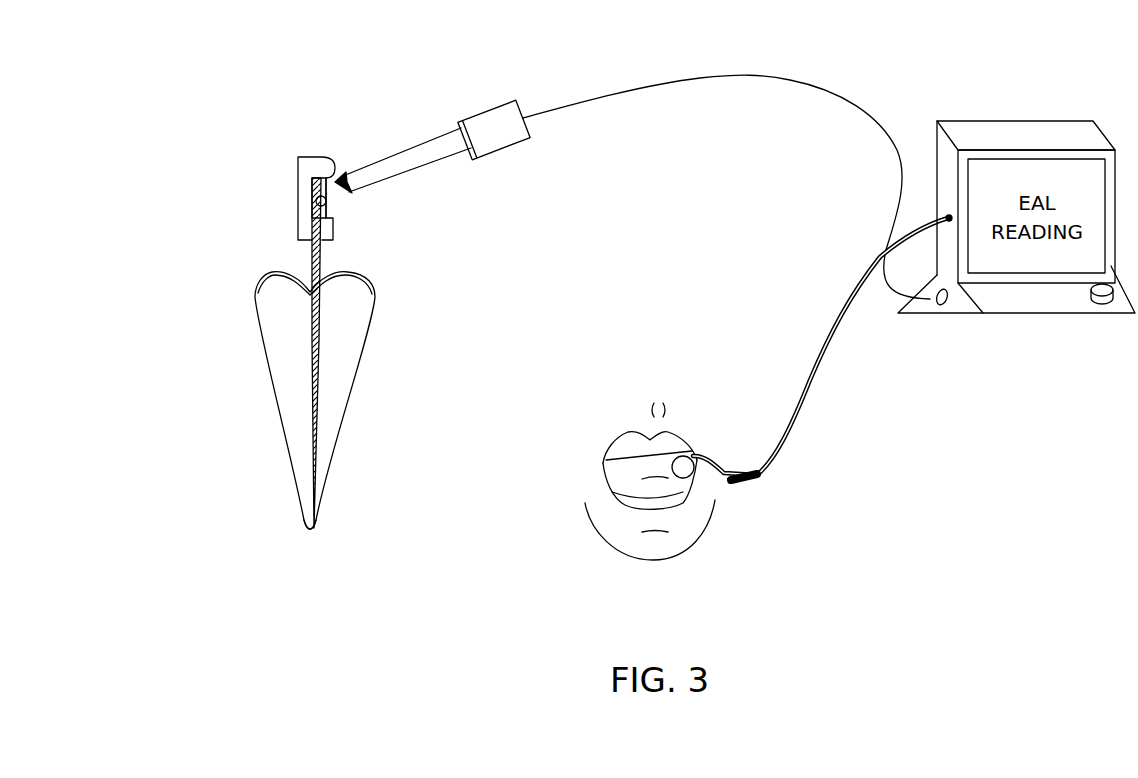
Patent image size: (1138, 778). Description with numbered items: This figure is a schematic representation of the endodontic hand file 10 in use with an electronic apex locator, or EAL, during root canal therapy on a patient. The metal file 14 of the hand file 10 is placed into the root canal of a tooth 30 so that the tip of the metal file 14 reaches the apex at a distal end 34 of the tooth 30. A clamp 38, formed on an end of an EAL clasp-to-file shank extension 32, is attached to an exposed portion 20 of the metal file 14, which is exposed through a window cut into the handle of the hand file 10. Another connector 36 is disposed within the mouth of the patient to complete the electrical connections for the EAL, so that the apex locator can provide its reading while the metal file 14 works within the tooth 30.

The endodontic hand file 10 is at (276, 163).
The metal file 14 is at (318, 375).
The exposed portion 20 is at (316, 200).
The tooth 30 is at (376, 305).
The EAL clasp-to-file shank extension 32 is at (483, 110).
The distal end 34 is at (298, 515).
The connector 36 is at (712, 457).
The clamp 38 is at (338, 194).